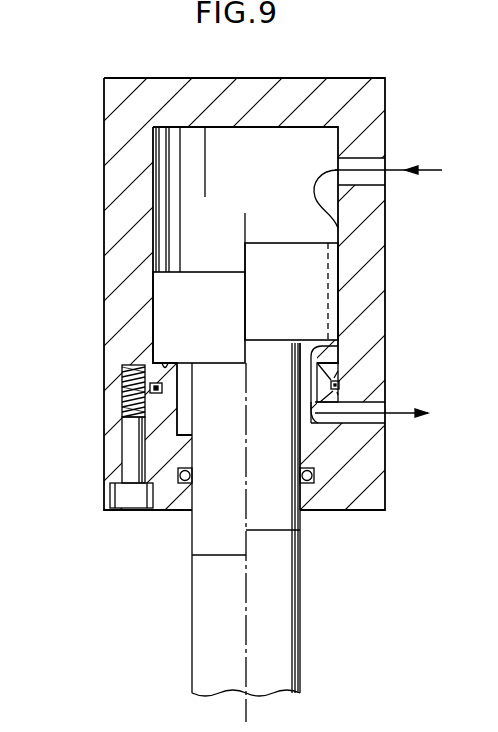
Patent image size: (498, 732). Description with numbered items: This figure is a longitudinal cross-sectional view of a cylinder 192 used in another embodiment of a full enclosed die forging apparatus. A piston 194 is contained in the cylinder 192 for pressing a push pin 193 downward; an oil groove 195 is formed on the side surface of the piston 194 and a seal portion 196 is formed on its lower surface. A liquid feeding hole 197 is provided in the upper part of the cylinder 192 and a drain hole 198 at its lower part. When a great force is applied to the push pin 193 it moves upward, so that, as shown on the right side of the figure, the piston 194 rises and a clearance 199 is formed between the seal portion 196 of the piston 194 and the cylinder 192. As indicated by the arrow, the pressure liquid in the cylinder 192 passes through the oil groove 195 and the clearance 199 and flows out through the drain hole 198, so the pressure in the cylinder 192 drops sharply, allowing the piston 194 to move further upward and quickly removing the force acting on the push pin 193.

The cylinder 192 is at (366, 300).
The push pin 193 is at (283, 645).
The piston 194 is at (157, 292).
The oil groove 195 is at (338, 260).
The seal portion 196 is at (168, 367).
The liquid feeding hole 197 is at (378, 161).
The drain hole 198 is at (380, 405).
The clearance 199 is at (338, 386).